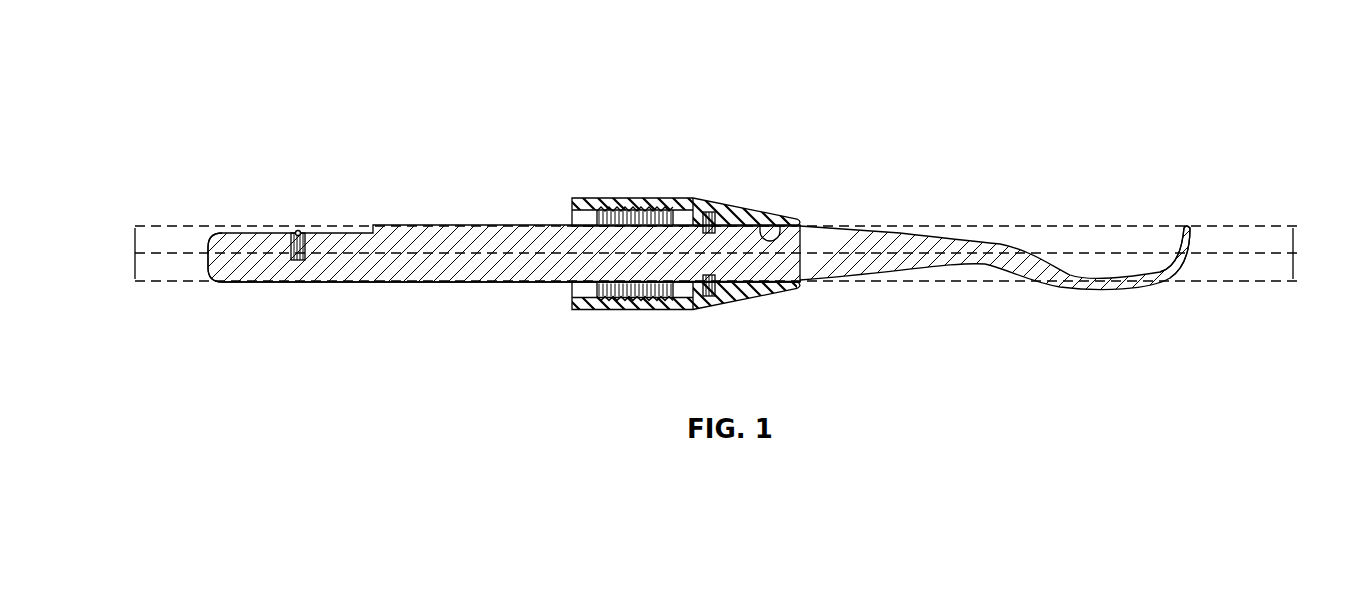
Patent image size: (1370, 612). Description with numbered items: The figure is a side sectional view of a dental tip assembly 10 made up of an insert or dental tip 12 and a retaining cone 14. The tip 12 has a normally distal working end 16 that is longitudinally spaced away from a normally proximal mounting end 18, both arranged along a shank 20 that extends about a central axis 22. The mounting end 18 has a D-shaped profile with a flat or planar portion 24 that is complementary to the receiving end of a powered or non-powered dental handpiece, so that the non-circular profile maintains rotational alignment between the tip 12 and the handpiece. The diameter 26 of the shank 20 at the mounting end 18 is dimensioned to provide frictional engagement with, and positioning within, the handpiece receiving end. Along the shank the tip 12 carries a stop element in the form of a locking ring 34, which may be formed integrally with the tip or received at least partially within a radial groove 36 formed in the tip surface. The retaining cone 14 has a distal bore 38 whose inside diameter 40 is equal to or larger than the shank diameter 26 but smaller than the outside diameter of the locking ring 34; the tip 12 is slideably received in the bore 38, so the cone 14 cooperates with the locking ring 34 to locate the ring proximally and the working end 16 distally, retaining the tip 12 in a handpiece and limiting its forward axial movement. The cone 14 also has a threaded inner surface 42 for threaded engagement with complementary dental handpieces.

The dental tip assembly 10 is at (484, 87).
The dental tip 12 is at (466, 223).
The retaining cone 14 is at (633, 197).
The working end 16 is at (1175, 280).
The mounting end 18 is at (213, 279).
The shank 20 is at (500, 283).
The central axis 22 is at (1200, 253).
The flat or planar portion 24 is at (278, 231).
The shank diameter 26 is at (133, 250).
The locking ring 34 is at (700, 225).
The radial groove 36 is at (700, 225).
The distal bore 38 is at (773, 233).
The inside diameter 40 is at (1296, 253).
The inner surface 42 is at (578, 295).